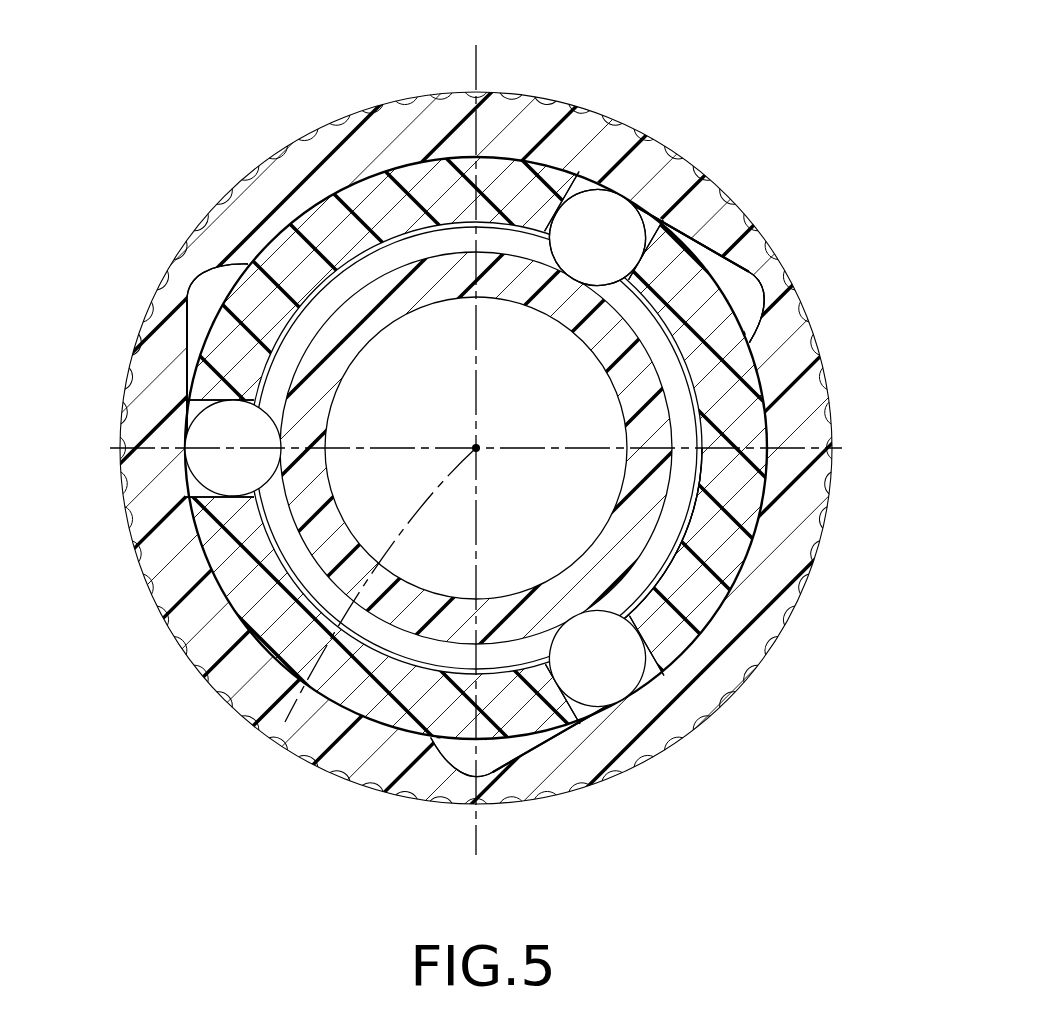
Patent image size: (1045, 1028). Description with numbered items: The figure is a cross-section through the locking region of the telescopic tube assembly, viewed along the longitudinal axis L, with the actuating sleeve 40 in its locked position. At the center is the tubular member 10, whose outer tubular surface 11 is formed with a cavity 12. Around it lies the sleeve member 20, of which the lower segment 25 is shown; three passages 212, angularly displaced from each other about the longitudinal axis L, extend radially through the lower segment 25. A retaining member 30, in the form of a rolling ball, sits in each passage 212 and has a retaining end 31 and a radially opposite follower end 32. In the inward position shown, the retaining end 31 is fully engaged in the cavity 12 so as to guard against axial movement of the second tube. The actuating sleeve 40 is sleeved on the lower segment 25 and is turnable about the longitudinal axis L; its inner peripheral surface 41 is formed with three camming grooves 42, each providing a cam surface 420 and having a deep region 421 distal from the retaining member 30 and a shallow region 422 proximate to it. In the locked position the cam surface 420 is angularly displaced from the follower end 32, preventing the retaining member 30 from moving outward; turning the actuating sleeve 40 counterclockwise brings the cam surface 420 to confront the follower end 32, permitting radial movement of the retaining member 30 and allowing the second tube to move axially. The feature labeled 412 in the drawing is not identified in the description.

The tubular member 10 is at (662, 409).
The outer tubular surface 11 is at (698, 520).
The cavity 12 is at (662, 357).
The sleeve member 20 is at (352, 194).
The lower segment 25 is at (283, 608).
The retaining member 30 is at (650, 203).
The retaining end 31 is at (567, 262).
The follower end 32 is at (613, 195).
The actuating sleeve 40 is at (608, 112).
The inner peripheral surface 41 is at (767, 527).
The arc surface of positioning portion 412 is at (645, 546).
The camming groove 42 is at (212, 290).
The cam surface 420 is at (187, 327).
The deep region 421 is at (749, 307).
The shallow region 422 is at (690, 253).
The passage 212 is at (560, 225).
The longitudinal axis L is at (278, 725).